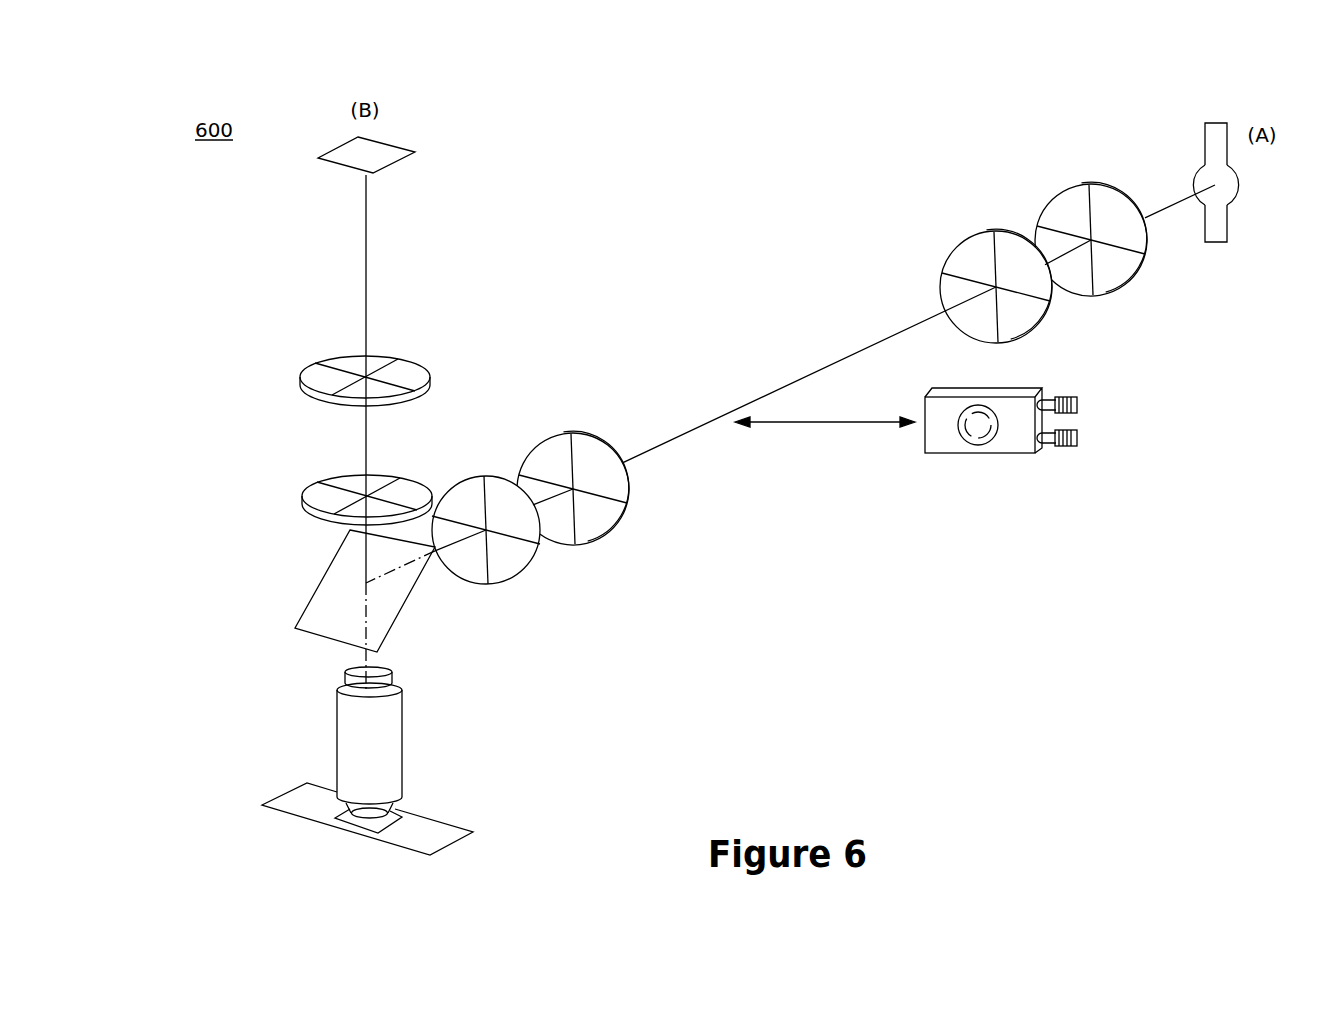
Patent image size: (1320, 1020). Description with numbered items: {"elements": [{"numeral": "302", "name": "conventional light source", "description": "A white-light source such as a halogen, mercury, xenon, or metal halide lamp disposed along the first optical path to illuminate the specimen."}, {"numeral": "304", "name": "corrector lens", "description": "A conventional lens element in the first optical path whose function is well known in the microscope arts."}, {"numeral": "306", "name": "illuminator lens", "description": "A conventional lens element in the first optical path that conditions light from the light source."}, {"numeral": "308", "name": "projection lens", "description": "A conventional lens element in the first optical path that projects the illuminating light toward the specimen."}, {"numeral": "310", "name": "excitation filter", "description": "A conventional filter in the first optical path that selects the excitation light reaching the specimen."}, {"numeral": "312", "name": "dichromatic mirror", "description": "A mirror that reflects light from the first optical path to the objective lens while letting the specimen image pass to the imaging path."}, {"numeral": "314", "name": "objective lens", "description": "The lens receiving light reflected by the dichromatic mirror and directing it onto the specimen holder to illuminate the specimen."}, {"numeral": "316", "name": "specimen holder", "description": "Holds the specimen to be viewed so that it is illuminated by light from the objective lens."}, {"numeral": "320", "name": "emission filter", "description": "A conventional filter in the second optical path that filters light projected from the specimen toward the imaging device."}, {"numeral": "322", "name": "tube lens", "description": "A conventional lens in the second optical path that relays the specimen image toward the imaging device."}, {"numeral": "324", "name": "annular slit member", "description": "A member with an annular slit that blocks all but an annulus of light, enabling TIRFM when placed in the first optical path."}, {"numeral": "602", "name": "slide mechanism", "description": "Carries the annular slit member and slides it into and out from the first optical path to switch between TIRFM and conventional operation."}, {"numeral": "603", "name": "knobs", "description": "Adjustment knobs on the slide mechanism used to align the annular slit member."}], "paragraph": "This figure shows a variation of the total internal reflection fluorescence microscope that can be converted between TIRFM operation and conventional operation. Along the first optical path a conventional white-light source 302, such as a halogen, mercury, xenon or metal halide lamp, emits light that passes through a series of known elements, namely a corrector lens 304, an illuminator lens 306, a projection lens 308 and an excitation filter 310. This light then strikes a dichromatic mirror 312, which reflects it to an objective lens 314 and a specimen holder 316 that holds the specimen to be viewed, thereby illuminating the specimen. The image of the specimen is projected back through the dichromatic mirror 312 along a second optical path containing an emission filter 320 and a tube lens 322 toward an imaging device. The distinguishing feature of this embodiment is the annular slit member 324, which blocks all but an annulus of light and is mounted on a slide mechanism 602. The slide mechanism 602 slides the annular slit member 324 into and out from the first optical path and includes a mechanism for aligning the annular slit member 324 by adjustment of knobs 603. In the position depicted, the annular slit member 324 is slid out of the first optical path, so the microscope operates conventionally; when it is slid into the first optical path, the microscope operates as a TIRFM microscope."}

The light source lamp 302 is at (1212, 137).
The collector lens 304 is at (1055, 205).
The lens 306 is at (958, 253).
The lens 308 is at (605, 527).
The lens 310 is at (515, 570).
The mirror 312 is at (393, 603).
The objective lens 314 is at (393, 740).
The sample stage 316 is at (437, 828).
The lens 320 is at (317, 495).
The lens 322 is at (412, 372).
The aperture of optical switching device 324 is at (975, 445).
The optical switching device housing 602 is at (1028, 455).
The connector 603 is at (1078, 405).